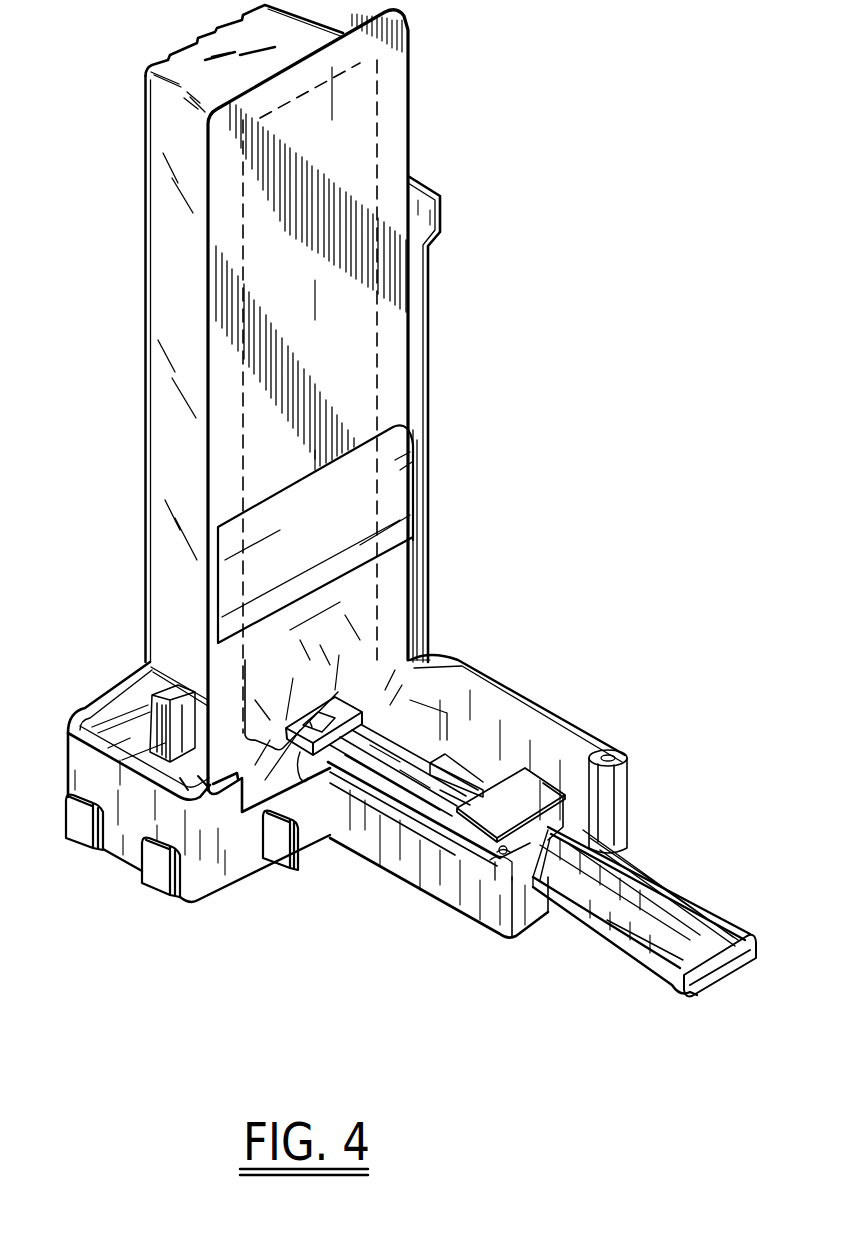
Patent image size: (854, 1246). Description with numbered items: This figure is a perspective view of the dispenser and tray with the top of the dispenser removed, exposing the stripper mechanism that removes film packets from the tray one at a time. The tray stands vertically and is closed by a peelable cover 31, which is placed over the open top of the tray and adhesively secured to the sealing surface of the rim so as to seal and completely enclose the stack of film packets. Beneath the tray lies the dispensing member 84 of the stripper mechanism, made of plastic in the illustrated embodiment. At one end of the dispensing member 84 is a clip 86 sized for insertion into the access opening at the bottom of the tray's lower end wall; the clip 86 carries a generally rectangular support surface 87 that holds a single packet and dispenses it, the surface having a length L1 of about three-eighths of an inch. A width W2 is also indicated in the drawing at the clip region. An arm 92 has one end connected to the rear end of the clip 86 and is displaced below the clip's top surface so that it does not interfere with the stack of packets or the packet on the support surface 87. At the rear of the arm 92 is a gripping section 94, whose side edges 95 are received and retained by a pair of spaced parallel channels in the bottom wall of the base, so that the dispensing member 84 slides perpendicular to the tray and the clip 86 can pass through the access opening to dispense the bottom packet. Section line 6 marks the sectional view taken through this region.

The peelable cover 31 is at (359, 149).
The arm 92 is at (548, 768).
The clip 86 is at (305, 752).
The support surface 87 is at (320, 768).
The dispensing member 84 is at (650, 870).
The side edges 95 is at (670, 917).
The gripping section 94 is at (677, 920).
The width dimension W2 is at (398, 662).
The length of support surface L1 is at (335, 660).
The section line 6- 6 is at (82, 628).